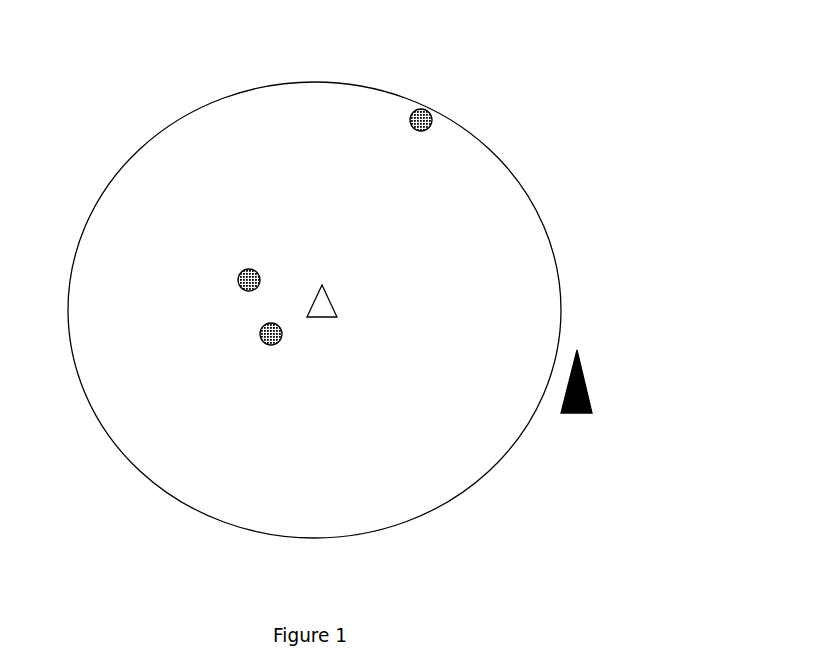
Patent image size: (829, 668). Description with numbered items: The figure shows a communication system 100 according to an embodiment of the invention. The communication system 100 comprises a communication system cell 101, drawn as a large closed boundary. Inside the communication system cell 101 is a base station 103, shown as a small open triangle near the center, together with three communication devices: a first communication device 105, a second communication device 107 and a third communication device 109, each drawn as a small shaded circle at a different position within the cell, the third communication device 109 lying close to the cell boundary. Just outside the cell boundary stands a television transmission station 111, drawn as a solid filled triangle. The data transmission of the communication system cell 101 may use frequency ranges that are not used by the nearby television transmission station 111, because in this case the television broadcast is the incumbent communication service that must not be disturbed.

The communication system 100 is at (653, 77).
The communication system cell 101 is at (307, 83).
The base station 103 is at (342, 300).
The first communication device 105 is at (272, 347).
The second communication device 107 is at (246, 270).
The third communication device 109 is at (437, 118).
The television transmission station 111 is at (592, 365).